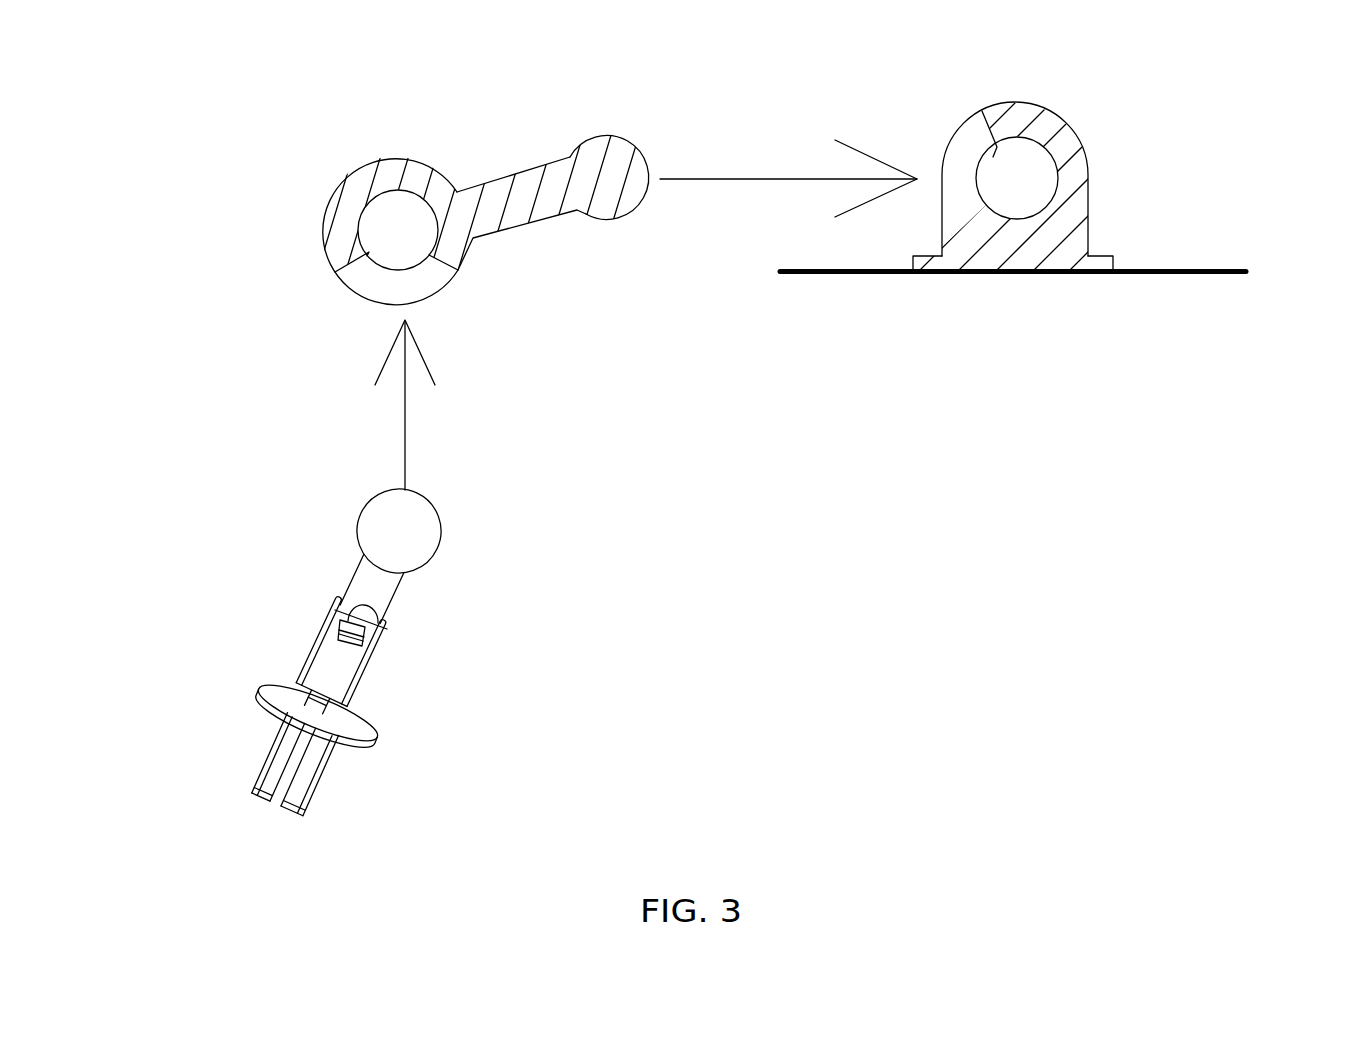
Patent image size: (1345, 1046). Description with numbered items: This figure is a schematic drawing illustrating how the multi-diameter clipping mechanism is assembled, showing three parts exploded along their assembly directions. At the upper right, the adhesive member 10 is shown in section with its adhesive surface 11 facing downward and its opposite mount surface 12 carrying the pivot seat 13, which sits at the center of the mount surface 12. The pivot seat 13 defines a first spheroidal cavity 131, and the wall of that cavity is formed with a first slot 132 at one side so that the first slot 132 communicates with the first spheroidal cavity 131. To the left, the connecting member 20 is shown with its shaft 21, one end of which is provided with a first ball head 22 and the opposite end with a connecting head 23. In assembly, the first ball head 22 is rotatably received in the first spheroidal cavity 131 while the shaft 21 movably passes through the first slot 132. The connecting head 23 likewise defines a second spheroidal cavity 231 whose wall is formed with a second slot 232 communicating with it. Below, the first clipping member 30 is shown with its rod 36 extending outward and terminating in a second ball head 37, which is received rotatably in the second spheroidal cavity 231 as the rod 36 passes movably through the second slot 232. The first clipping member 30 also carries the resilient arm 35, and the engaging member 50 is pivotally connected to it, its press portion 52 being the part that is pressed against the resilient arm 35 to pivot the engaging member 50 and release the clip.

The adhesive member 10 is at (1054, 200).
The adhesive surface 11 is at (1157, 275).
The mount surface 12 is at (1210, 269).
The pivot seat 13 is at (1041, 141).
The first spheroidal cavity 131 is at (1027, 173).
The first slot 132 is at (963, 158).
The connecting member 20 is at (430, 212).
The shaft 21 is at (535, 221).
The first ball head 22 is at (607, 136).
The connecting head 23 is at (320, 242).
The second spheroidal cavity 231 is at (390, 218).
The second slot 232 is at (377, 283).
The first clipping member 30 is at (359, 659).
The resilient arm 35 is at (338, 659).
The rod 36 is at (372, 588).
The second ball head 37 is at (399, 531).
The engaging member 50 is at (295, 764).
The press portion 52 is at (316, 716).